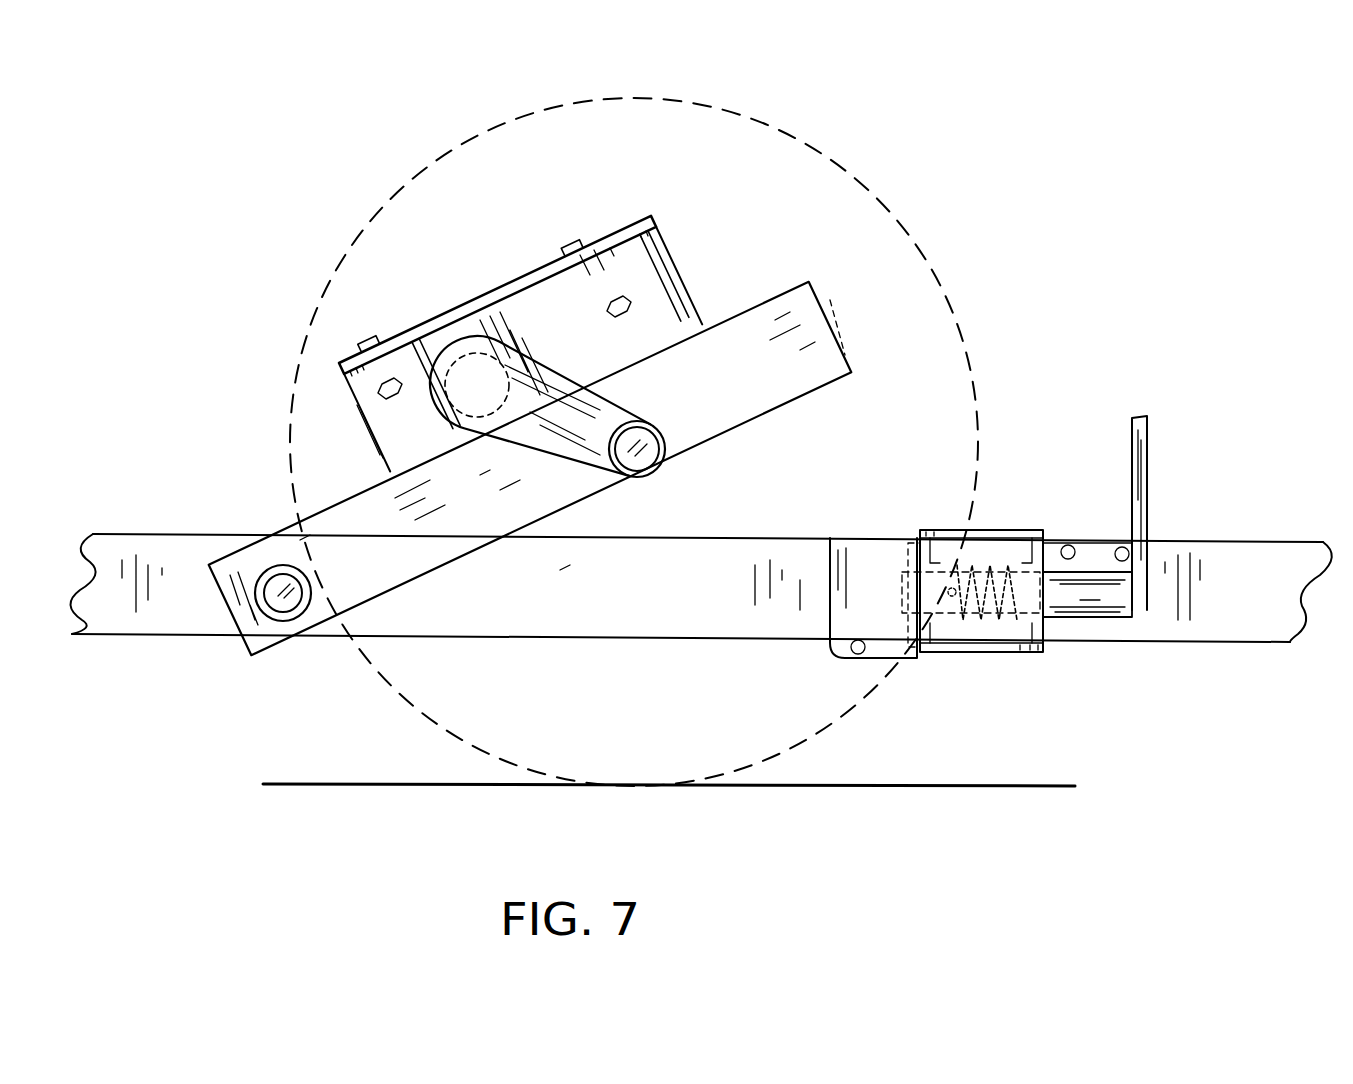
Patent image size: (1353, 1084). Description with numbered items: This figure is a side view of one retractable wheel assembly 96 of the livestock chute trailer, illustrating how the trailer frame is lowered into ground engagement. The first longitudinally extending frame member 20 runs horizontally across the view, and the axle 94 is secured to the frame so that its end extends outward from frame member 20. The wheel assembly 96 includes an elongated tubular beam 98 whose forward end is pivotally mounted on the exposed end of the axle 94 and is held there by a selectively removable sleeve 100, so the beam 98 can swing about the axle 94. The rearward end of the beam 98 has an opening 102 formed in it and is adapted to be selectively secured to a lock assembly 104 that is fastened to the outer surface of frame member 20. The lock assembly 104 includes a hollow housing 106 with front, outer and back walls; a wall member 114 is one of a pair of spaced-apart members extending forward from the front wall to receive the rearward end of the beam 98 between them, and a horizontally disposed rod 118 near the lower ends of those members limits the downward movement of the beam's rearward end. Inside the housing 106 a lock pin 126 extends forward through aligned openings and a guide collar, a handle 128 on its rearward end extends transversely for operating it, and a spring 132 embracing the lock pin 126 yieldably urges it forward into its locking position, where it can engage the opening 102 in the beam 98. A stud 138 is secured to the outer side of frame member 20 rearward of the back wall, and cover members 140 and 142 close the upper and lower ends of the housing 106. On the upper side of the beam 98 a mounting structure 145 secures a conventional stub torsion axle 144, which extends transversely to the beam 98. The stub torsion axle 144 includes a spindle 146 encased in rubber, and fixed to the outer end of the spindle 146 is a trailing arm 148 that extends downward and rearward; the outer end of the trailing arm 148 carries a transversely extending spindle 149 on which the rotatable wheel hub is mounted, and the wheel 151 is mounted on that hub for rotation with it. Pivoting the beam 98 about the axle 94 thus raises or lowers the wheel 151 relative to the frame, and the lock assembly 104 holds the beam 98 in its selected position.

The first longitudinally extending frame member 20 is at (172, 543).
The axle 94 is at (273, 590).
The retractable wheel assembly 96 is at (705, 459).
The elongated tubular beam 98 is at (402, 548).
The sleeve 100 is at (292, 608).
The opening 102 is at (833, 328).
The lock assembly 104 is at (982, 664).
The hollow housing 106 is at (1087, 595).
The wall member 114 is at (815, 639).
The rod 118 is at (884, 626).
The lock pin 126 is at (1078, 615).
The handle 128 is at (1147, 478).
The spring 132 is at (990, 545).
The stud 138 is at (1128, 553).
The cover member 140 is at (987, 562).
The cover member 142 is at (948, 648).
The stub torsion axle 144 is at (583, 302).
The mounting structure 145 is at (630, 278).
The spindle 146 is at (474, 352).
The trailing arm 148 is at (598, 364).
The spindle 149 is at (640, 462).
The wheel 151 is at (948, 272).